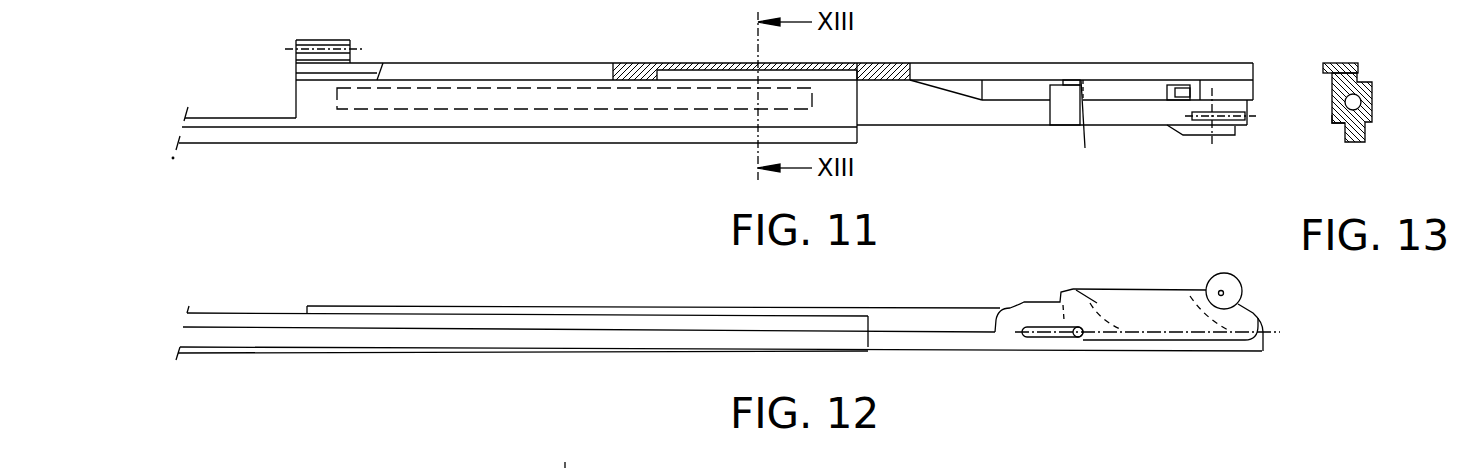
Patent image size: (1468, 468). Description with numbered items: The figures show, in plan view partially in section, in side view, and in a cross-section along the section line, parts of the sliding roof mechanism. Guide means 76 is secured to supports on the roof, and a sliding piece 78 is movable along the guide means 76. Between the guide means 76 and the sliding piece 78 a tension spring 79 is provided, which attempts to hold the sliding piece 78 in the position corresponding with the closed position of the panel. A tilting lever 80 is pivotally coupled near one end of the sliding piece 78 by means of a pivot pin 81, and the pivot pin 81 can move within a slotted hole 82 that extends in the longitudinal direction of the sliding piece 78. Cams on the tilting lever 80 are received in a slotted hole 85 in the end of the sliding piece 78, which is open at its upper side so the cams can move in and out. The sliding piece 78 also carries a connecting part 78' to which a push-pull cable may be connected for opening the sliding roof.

In FIG. 11, the guide means 76 is at (237, 143).
In FIG. 12, the guide means 76 is at (233, 315).
In FIG. 13, the guide means 76 is at (1333, 123).
In FIG. 11, the sliding piece 78 is at (776, 123).
In FIG. 12, the sliding piece 78 is at (730, 342).
In FIG. 13, the sliding piece 78 is at (1349, 98).
In FIG. 11, the connecting part 78' is at (300, 74).
In FIG. 13, the tension spring 79 is at (1372, 105).
In FIG. 11, the tilting lever 80 is at (1128, 117).
In FIG. 12, the tilting lever 80 is at (1238, 293).
In FIG. 12, the pivot pin 81 is at (1078, 340).
In FIG. 12, the slotted hole 82 is at (1035, 333).
In FIG. 11, the slotted hole 85 is at (1177, 85).